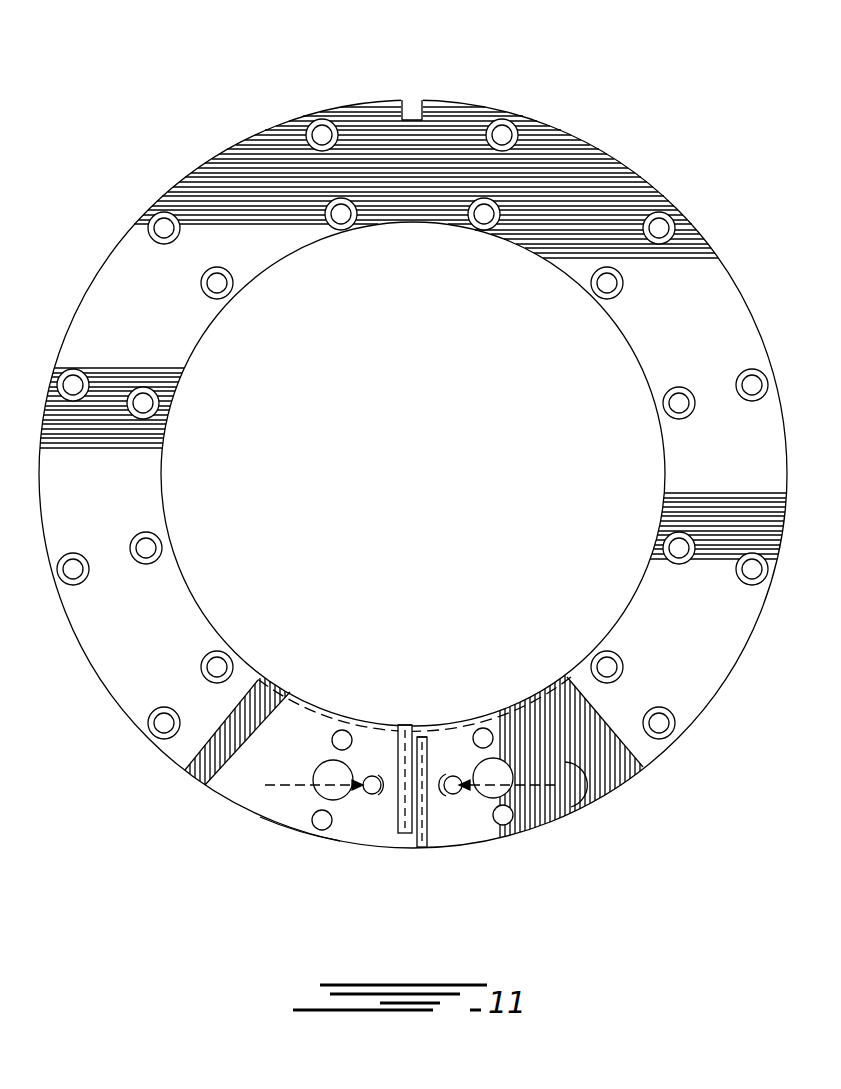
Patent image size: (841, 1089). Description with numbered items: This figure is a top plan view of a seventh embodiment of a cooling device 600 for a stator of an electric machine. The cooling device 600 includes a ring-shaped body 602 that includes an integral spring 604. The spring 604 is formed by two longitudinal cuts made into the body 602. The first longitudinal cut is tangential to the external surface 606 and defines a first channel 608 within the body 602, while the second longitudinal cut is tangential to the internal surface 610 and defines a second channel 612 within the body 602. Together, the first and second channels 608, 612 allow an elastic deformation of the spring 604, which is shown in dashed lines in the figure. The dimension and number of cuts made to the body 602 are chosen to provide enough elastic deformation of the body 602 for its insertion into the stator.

The cooling device 600 is at (95, 153).
The body 602 is at (587, 805).
The integral spring 604 is at (407, 713).
The external surface 606 is at (305, 835).
The first channel 608 is at (425, 847).
The internal surface 610 is at (285, 692).
The second channel 612 is at (405, 727).